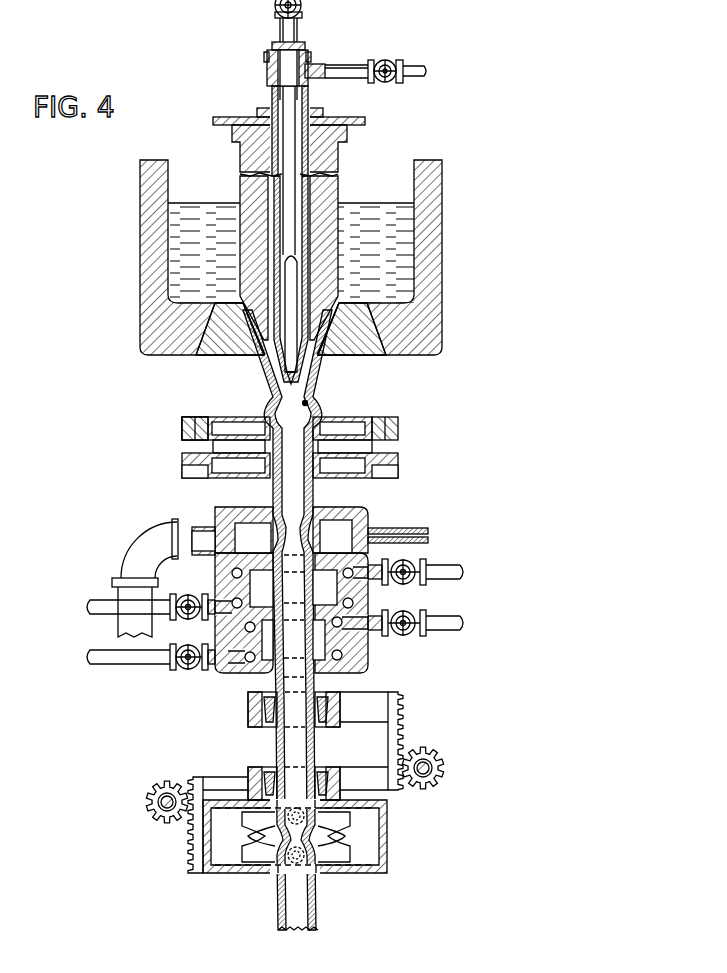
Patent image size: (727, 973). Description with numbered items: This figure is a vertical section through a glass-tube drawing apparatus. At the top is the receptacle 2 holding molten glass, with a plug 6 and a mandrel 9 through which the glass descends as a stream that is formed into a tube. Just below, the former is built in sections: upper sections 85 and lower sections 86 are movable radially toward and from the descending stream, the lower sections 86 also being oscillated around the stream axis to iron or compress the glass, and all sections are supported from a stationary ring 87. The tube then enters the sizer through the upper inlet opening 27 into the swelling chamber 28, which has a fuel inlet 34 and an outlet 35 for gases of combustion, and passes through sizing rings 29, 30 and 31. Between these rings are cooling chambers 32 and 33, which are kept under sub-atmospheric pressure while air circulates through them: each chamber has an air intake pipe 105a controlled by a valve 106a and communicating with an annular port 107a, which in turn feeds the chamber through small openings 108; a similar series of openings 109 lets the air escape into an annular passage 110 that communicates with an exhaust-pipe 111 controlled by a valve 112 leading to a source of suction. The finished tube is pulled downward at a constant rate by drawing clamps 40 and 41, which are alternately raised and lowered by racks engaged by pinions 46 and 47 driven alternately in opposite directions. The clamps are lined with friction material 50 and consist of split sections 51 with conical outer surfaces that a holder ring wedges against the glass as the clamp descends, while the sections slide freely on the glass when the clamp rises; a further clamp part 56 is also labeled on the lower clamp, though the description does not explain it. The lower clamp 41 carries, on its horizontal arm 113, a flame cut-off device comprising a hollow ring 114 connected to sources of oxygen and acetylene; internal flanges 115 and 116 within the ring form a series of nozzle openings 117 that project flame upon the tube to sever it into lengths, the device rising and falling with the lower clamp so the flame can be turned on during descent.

The receptacle 2 is at (430, 253).
The plug 6 is at (338, 182).
The mandrel 9 is at (262, 363).
The upper inlet opening 27 is at (313, 508).
The swelling chamber 28 is at (352, 527).
The sizing ring 29 is at (244, 530).
The sizing ring 30 is at (370, 612).
The sizing ring 31 is at (322, 672).
The cooling chamber 32 is at (244, 613).
The cooling chamber 33 is at (360, 640).
The fuel inlet 34 is at (417, 519).
The outlet for gases of combustion 35 is at (196, 526).
The clamp 40 is at (248, 707).
The clamp 41 is at (330, 780).
The pinion 46 is at (441, 768).
The pinion 47 is at (147, 803).
The friction material 50 is at (266, 768).
The split sections 51 is at (340, 707).
The clamp jaw 56 is at (262, 792).
The upper sections 85 is at (335, 418).
The lower sections 86 is at (241, 479).
The stationary ring 87 is at (400, 421).
The air intake pipe 105a is at (458, 572).
The valve 106a is at (428, 568).
The annular port 107a is at (230, 575).
The small openings 108 is at (230, 580).
The openings 109 is at (340, 613).
The annular passage 110 is at (233, 629).
The exhaust-pipe 111 is at (106, 600).
The valve 112 is at (170, 607).
The horizontal arm 113 is at (218, 786).
The hollow ring 114 is at (388, 838).
The internal flange 115 is at (360, 818).
The internal flange 116 is at (333, 866).
The nozzle openings 117 is at (252, 866).